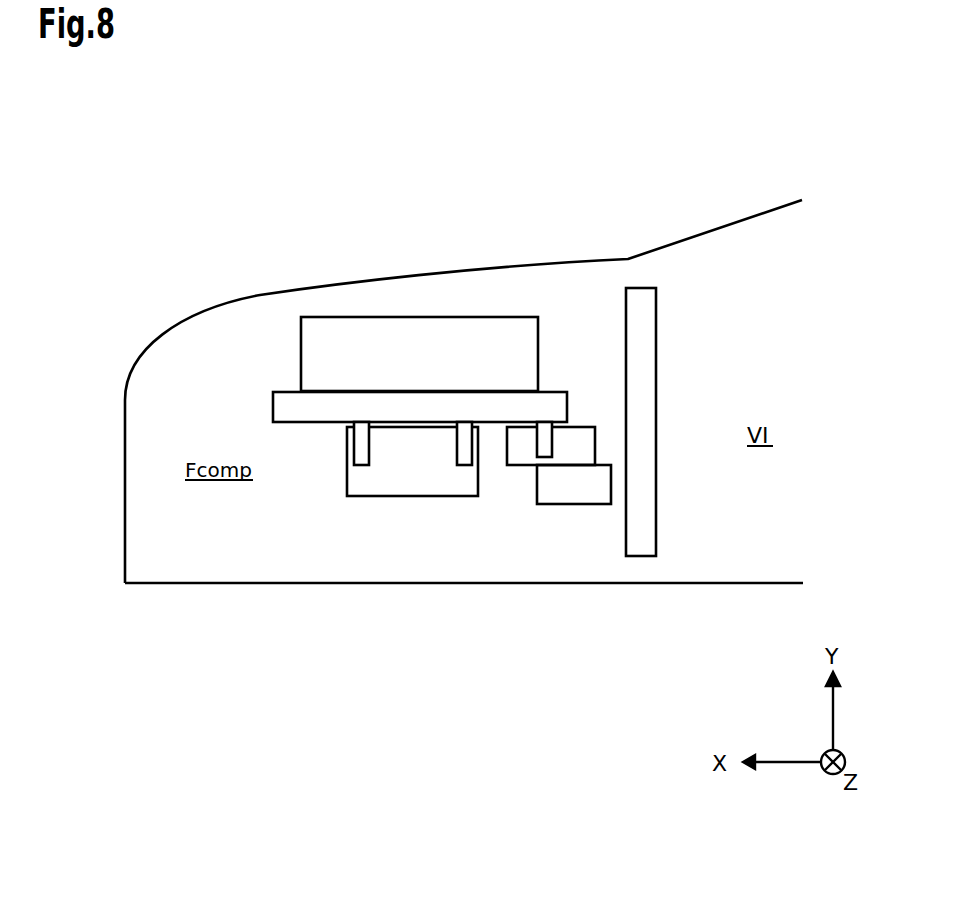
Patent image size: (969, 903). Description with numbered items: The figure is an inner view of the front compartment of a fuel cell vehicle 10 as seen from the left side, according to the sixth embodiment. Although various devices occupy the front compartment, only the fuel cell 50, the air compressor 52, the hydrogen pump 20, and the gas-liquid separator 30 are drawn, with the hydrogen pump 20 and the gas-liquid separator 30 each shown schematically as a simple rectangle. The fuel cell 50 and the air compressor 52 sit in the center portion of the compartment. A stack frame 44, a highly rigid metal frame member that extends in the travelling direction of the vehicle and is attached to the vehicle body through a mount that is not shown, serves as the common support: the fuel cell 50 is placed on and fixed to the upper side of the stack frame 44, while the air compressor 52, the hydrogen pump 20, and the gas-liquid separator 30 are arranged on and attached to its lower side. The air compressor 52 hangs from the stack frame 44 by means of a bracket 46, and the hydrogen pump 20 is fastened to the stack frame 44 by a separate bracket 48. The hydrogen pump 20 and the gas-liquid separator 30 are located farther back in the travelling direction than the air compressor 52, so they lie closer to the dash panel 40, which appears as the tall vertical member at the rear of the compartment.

The fuel cell vehicle 10 is at (427, 157).
The hydrogen pump 20 is at (580, 422).
The gas-liquid separator 30 is at (604, 506).
The dash panel 40 is at (656, 343).
The stack frame 44 is at (551, 391).
The bracket 46 is at (348, 443).
The bracket 48 is at (536, 443).
The fuel cell 50 is at (448, 313).
The air compressor 52 is at (347, 482).